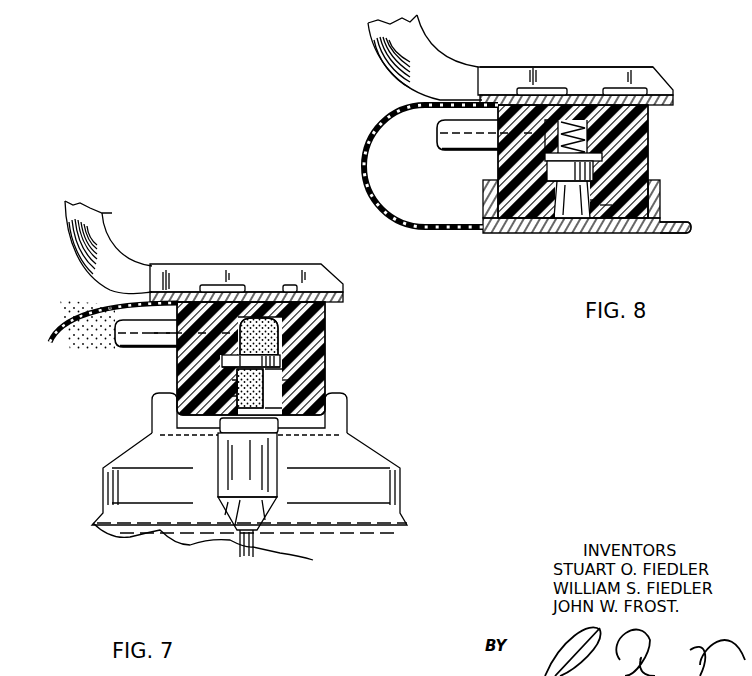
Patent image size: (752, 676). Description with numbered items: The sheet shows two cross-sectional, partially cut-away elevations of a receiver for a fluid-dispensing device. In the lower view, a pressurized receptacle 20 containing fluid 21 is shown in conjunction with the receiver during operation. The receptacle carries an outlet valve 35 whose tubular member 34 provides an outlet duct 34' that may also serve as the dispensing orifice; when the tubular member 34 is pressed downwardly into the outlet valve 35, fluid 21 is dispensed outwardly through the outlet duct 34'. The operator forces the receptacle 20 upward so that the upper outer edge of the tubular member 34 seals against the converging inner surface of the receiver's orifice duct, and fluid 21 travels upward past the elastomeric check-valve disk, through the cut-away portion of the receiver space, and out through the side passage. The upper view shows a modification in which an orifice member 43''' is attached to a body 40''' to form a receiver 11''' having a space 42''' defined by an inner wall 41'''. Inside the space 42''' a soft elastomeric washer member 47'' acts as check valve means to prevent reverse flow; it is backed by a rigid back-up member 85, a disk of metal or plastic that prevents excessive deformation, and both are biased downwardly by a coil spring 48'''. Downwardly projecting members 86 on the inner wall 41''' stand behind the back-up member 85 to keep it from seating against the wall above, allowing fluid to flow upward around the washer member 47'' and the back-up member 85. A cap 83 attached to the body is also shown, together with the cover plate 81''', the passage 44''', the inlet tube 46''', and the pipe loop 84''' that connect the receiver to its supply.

In FIG. 7, the outlet duct 34' is at (302, 380).
In FIG. 7, the pressurized receptacle 20 is at (128, 442).
In FIG. 7, the fluid 21 is at (283, 518).
In FIG. 7, the tubular member 34 is at (227, 442).
In FIG. 7, the outlet valve 35 is at (228, 481).
In FIG. 8, the receiver 11''' is at (608, 132).
In FIG. 8, the cover plate 81''' is at (566, 51).
In FIG. 8, the body 40''' is at (570, 169).
In FIG. 8, the cap 83 is at (683, 225).
In FIG. 8, the coil spring 48''' is at (589, 113).
In FIG. 8, the downwardly projecting members 86 is at (552, 152).
In FIG. 8, the back-up member 85 is at (602, 150).
In FIG. 8, the space 42''' is at (520, 169).
In FIG. 8, the inner wall 41''' is at (515, 187).
In FIG. 8, the washer member 47'' is at (574, 222).
In FIG. 8, the passage 44''' is at (614, 234).
In FIG. 8, the orifice member 43''' is at (640, 233).
In FIG. 8, the inlet tube 46''' is at (450, 132).
In FIG. 8, the pipe loop 84''' is at (414, 166).